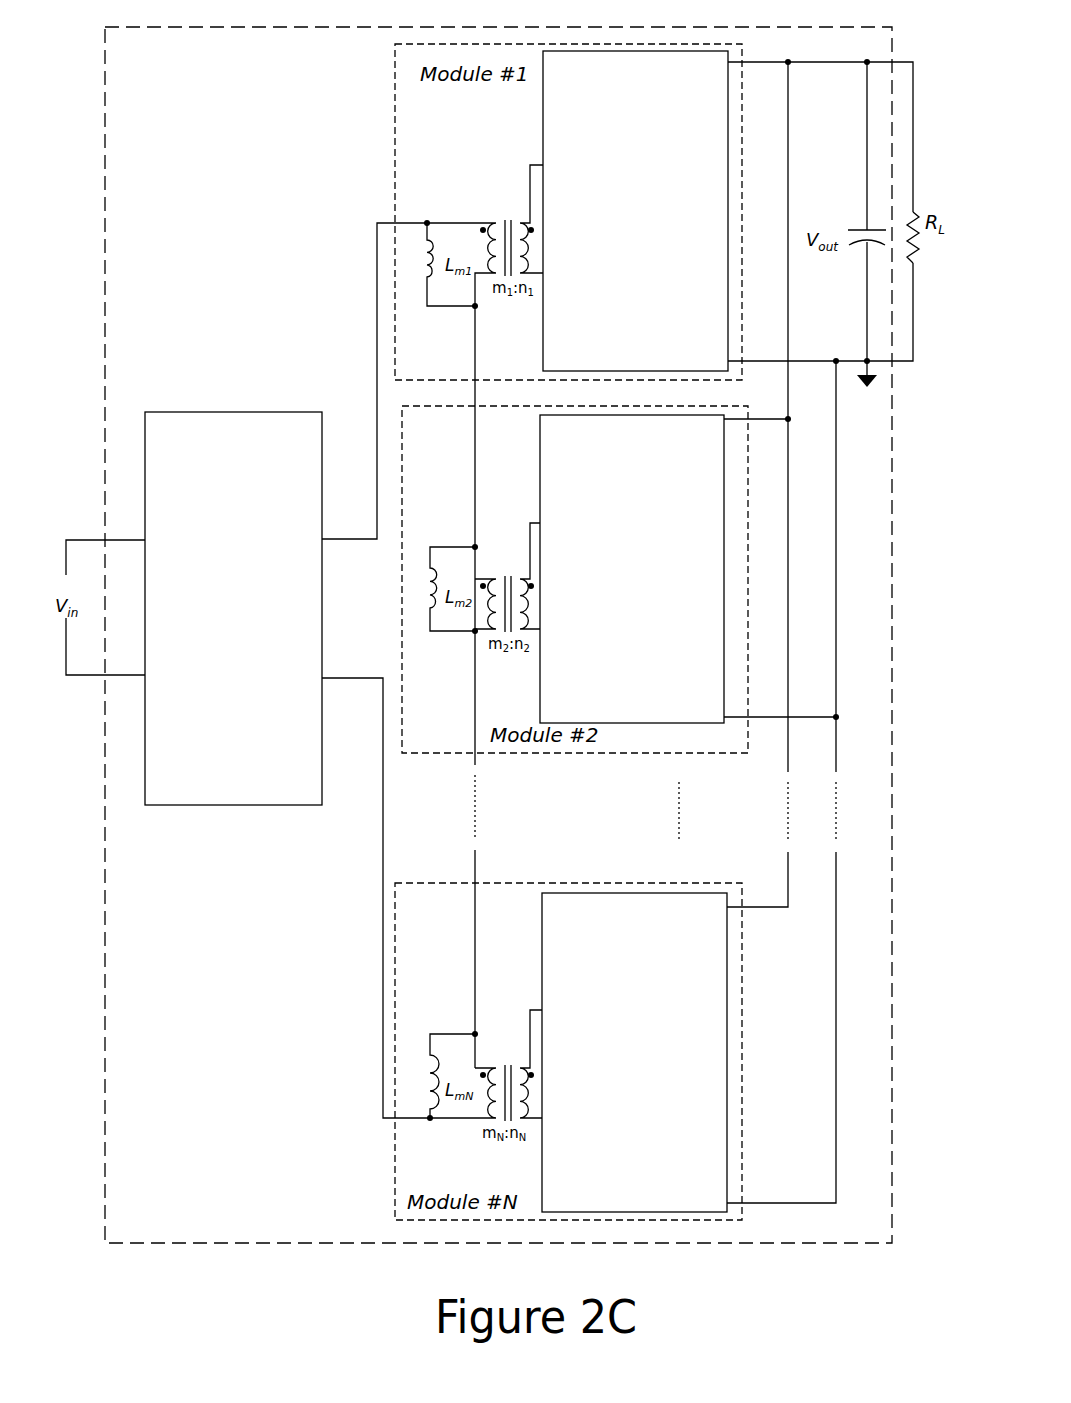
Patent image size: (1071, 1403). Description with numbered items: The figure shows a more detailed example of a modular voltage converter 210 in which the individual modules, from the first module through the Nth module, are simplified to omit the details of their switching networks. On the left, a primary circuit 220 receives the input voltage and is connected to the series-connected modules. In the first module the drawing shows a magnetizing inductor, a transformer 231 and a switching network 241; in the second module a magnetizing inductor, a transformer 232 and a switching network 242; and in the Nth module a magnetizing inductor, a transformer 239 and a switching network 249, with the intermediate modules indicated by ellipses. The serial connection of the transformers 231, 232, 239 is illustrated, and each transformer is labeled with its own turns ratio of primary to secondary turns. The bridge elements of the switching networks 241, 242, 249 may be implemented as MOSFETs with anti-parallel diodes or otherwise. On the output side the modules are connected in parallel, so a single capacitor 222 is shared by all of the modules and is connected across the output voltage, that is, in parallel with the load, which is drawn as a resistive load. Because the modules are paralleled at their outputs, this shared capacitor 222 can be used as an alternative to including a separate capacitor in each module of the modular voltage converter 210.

The modular voltage converter 210 is at (104, 186).
The primary circuit 220 is at (234, 411).
The capacitor 222 is at (848, 211).
The transformer 231 is at (491, 200).
The transformer 232 is at (508, 553).
The transformer 239 is at (506, 1040).
The switching network 241 is at (654, 221).
The switching network 242 is at (651, 580).
The switching network 249 is at (652, 1063).